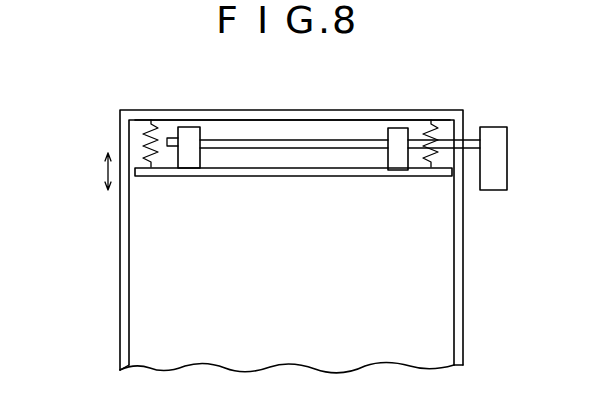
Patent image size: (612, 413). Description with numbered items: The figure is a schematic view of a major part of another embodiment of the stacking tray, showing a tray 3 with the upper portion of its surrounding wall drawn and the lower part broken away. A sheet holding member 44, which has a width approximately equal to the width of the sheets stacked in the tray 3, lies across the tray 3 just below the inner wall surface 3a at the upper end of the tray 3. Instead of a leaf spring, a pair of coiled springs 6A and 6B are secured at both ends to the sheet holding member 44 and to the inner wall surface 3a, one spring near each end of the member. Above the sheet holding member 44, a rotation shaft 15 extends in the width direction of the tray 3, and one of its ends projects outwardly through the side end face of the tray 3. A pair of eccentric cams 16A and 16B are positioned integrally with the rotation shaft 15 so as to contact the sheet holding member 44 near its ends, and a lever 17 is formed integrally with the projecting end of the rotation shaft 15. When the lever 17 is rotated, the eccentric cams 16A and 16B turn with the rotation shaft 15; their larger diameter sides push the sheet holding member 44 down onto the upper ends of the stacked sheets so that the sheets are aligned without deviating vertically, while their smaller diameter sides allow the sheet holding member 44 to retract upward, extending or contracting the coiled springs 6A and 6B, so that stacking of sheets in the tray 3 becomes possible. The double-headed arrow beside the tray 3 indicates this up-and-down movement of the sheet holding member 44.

The tray 3 is at (120, 254).
The inner wall surface 3a is at (268, 127).
The coiled spring 6A is at (150, 148).
The coiled spring 6B is at (438, 158).
The rotation shaft 15 is at (330, 142).
The eccentric cam 16A is at (398, 160).
The eccentric cam 16B is at (187, 133).
The tray locking and sheet holding member drive lever 17 is at (495, 163).
The sheet holding member 44 is at (180, 178).